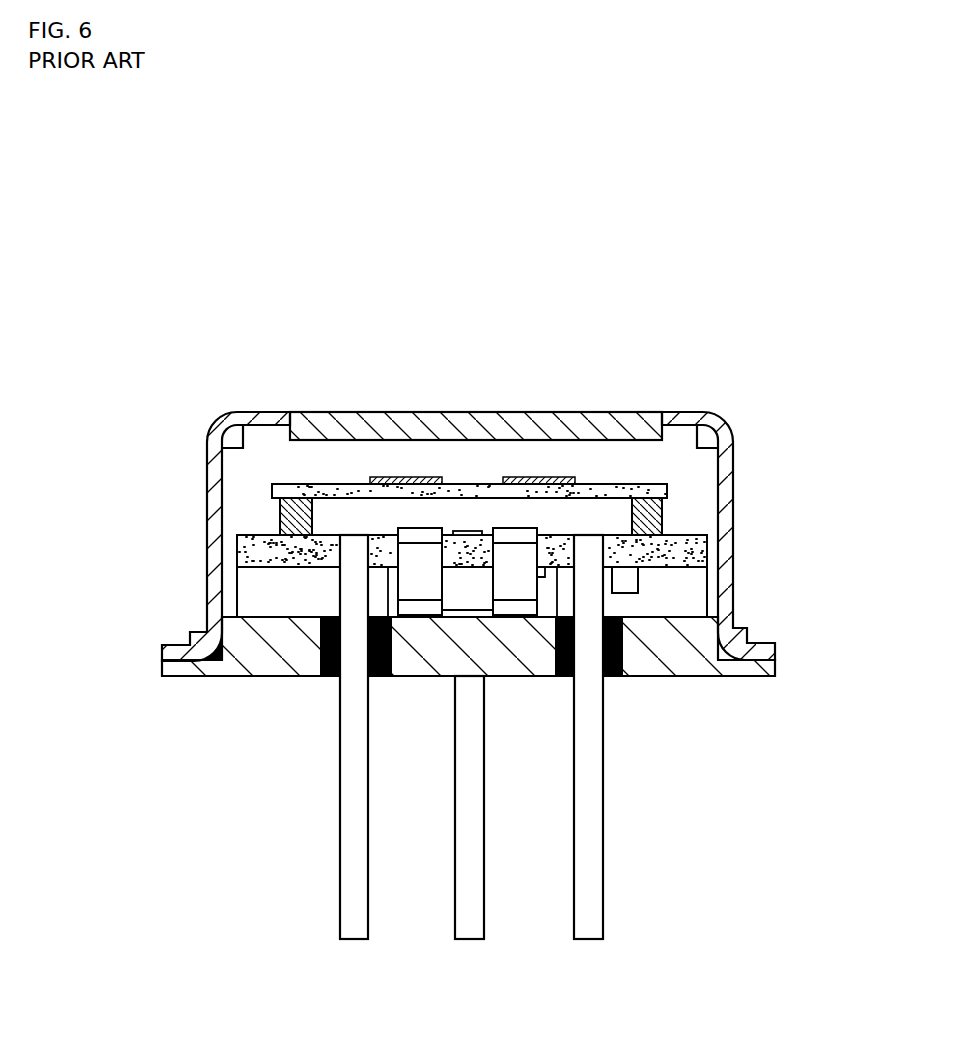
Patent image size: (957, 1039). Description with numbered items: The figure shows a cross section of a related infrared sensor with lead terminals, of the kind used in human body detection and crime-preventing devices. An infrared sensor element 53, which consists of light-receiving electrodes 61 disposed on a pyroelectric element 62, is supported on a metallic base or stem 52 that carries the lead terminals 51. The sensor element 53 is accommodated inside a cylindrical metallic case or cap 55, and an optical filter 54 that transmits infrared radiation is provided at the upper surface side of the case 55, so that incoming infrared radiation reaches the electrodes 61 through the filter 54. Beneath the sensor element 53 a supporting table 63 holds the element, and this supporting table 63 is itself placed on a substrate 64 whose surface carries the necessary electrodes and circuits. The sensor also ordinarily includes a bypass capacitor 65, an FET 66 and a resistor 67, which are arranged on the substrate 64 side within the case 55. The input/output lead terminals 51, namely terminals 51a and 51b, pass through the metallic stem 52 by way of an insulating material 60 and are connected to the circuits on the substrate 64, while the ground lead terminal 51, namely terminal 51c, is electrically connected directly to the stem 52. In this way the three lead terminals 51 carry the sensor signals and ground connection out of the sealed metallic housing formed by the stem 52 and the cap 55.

The lead terminals 51 is at (457, 770).
The input/output lead terminal 51a is at (340, 872).
The input/output lead terminal 51b is at (603, 832).
The ground lead terminal 51c is at (455, 906).
The metallic base (stem) 52 is at (256, 678).
The infrared sensor element 53 is at (271, 441).
The optical filter 54 is at (500, 412).
The metallic case (cap) 55 is at (688, 406).
The insulating material 60 is at (330, 678).
The light-receiving electrodes 61 is at (430, 477).
The pyroelectric element 62 is at (337, 484).
The supporting table 63 is at (279, 512).
The substrate 64 is at (667, 566).
The bypass capacitor 65 is at (537, 588).
The FET 66 is at (453, 612).
The resistor 67 is at (628, 594).